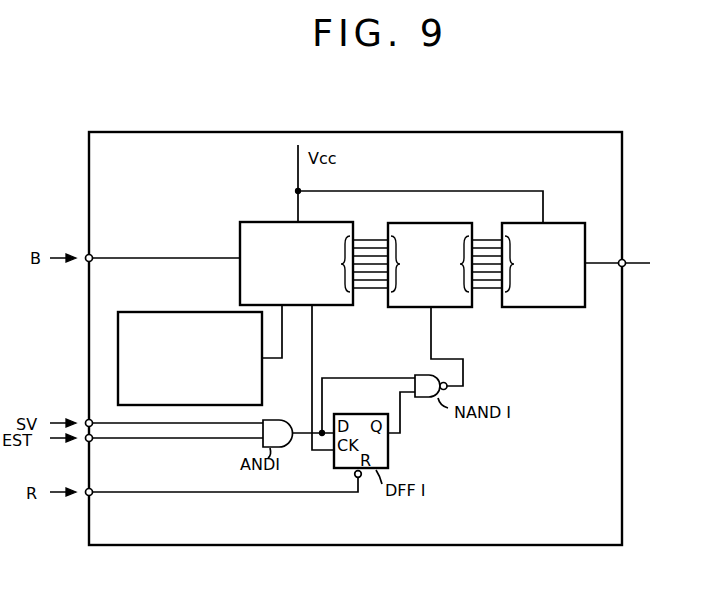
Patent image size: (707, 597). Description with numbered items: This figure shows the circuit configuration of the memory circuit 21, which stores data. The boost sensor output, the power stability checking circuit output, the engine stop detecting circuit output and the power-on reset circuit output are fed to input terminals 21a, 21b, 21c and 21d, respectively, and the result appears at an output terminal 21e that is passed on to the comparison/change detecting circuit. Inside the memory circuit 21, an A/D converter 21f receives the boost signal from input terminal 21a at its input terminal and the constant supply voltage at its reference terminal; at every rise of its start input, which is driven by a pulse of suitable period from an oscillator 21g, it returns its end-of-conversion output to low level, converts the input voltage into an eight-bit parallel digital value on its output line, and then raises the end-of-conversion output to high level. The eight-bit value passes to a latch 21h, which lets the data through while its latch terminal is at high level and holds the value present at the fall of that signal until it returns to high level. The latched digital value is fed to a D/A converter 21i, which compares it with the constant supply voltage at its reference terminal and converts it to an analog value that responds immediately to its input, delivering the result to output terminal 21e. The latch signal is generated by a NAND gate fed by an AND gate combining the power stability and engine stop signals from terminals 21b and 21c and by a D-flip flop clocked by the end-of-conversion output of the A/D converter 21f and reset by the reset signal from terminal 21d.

The memory circuit 21 is at (505, 132).
The input terminal 21a is at (94, 255).
The input terminal 21b is at (85, 420).
The input terminal 21c is at (92, 442).
The input terminal 21d is at (92, 496).
The output terminal 21e is at (626, 260).
The A/D converter 21f is at (262, 221).
The oscillator 21g is at (178, 311).
The latch 21h is at (455, 215).
The D/A converter 21i is at (540, 308).